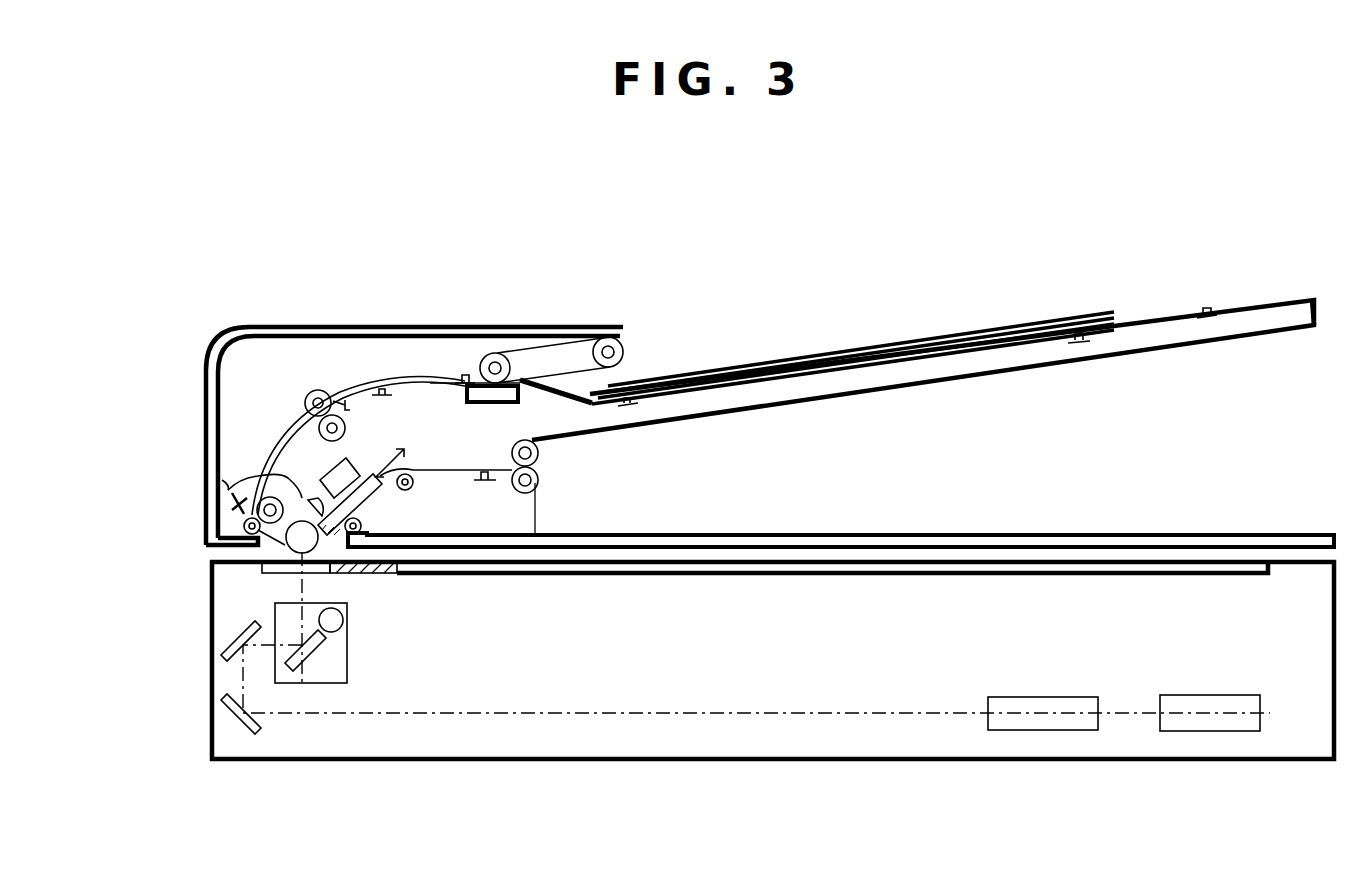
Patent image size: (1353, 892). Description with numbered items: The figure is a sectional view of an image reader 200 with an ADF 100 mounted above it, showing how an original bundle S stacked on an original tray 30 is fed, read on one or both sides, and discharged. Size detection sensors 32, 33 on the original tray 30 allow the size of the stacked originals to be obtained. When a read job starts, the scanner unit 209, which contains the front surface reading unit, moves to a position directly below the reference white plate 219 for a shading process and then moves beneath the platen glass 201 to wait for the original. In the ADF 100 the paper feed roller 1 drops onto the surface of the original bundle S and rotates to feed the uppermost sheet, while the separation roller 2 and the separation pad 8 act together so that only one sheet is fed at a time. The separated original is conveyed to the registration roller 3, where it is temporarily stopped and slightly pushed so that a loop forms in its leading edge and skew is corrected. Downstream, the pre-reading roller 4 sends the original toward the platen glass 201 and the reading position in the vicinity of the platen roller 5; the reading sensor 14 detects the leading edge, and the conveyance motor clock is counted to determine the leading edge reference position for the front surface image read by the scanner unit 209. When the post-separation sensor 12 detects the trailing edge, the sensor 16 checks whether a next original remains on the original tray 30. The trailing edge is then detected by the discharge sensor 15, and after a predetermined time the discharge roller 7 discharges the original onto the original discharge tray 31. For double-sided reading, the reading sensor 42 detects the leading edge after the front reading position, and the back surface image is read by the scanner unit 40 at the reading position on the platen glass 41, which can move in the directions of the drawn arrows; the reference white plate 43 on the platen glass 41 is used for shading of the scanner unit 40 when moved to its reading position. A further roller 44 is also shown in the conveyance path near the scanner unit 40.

The paper feed roller 1 is at (622, 345).
The separation roller 2 is at (500, 352).
The registration roller 3 is at (316, 390).
The pre-reading roller 4 is at (258, 505).
The platen roller 5 is at (258, 490).
The discharge roller 7 is at (540, 455).
The separation pad 8 is at (485, 405).
The post-separation sensor 12 is at (462, 375).
The reading sensor 14 is at (238, 500).
The discharge sensor 15 is at (533, 490).
The sensor 16 is at (632, 405).
The original tray 30 is at (1148, 340).
The original discharge tray 31 is at (817, 532).
The size detection sensor 32 is at (1082, 344).
The size detection sensor 33 is at (1218, 318).
The scanner unit 40 is at (345, 472).
The platen glass 41 is at (413, 485).
The reading sensor 42 is at (312, 500).
The reference white plate 43 is at (380, 470).
The roller 44 is at (362, 525).
The ADF 100 is at (137, 313).
The image reader 200 is at (137, 532).
The platen glass 201 is at (280, 570).
The scanner unit 209 is at (347, 640).
The reference white plate 219 is at (362, 575).
The original bundle S is at (898, 338).